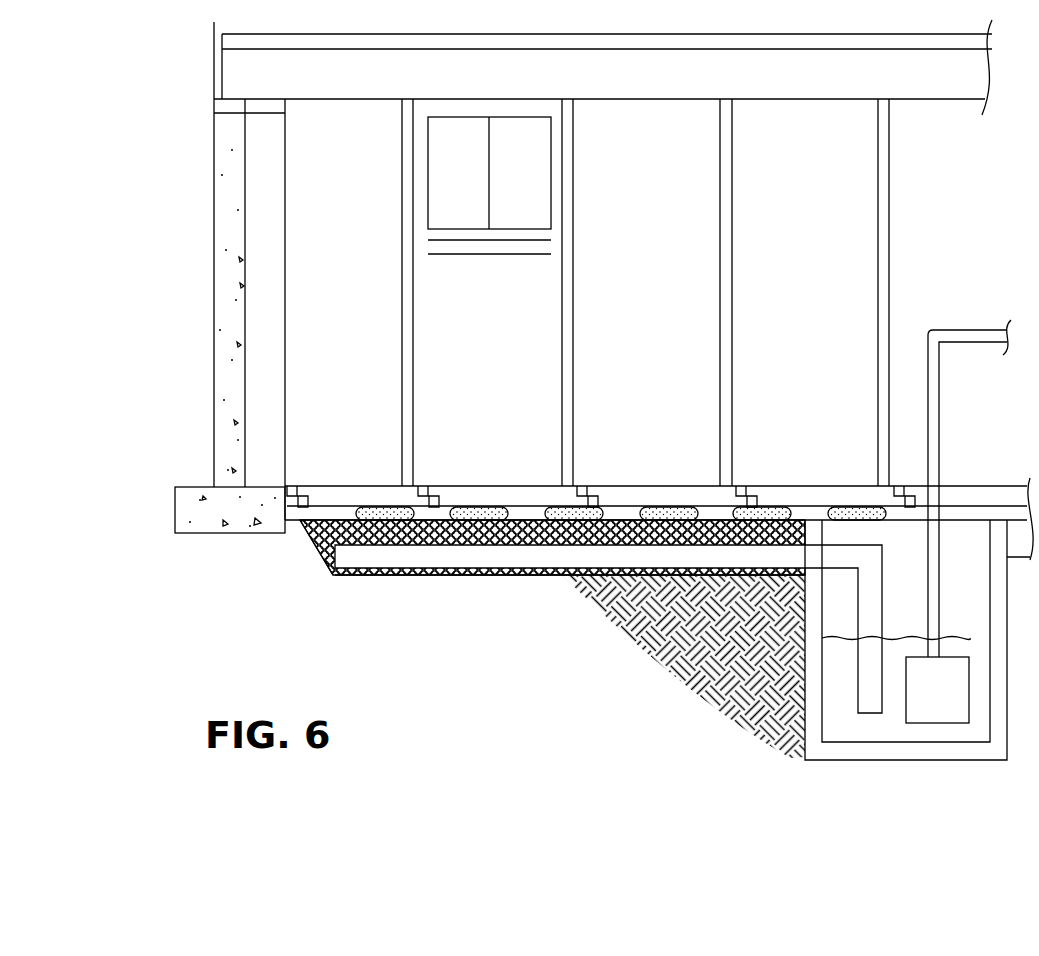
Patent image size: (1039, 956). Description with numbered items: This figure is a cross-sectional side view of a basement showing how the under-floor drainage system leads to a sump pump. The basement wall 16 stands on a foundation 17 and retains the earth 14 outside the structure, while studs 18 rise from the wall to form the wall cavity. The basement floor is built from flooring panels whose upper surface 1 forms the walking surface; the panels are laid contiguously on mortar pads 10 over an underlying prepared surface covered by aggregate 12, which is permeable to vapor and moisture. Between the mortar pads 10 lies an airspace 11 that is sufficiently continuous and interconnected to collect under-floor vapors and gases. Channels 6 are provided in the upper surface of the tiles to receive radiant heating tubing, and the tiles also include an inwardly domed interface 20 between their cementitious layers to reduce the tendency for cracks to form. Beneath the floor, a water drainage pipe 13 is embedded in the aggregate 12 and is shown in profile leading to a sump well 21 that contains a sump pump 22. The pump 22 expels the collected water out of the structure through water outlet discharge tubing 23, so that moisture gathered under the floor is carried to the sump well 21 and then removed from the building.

The upper surface 1 is at (463, 485).
The channel 6 is at (583, 485).
The mortar pad 10 is at (388, 511).
The airspace 11 is at (317, 548).
The aggregate 12 is at (440, 576).
The water drainage pipe 13 is at (540, 556).
The earth 14 is at (660, 660).
The basement wall 16 is at (226, 246).
The foundation 17 is at (196, 508).
The stud 18 is at (289, 306).
The interface 20 is at (478, 185).
The sump well 21 is at (822, 655).
The sump pump 22 is at (912, 703).
The water outlet discharge tubing 23 is at (928, 353).